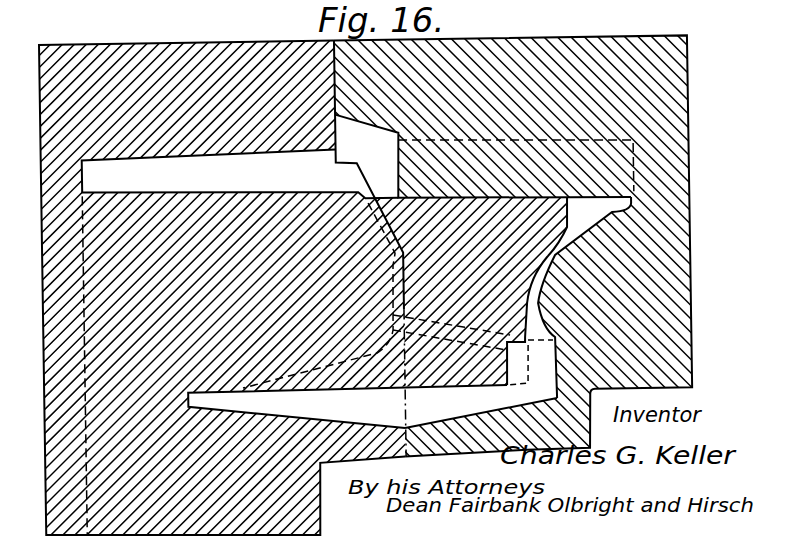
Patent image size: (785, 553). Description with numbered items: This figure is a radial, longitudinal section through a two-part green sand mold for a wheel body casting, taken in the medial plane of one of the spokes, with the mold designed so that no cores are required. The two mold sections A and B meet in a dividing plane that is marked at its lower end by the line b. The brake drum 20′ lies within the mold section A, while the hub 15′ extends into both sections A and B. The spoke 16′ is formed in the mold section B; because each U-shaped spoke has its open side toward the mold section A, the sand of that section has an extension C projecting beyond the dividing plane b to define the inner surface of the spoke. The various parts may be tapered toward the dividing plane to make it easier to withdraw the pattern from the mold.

The mold section A is at (165, 65).
The mold section B is at (557, 68).
The sand extensions C is at (392, 276).
The brake drum 20′ is at (240, 176).
The spoke 16′ is at (552, 263).
The hub 15′ is at (348, 408).
The dividing plane b is at (404, 393).